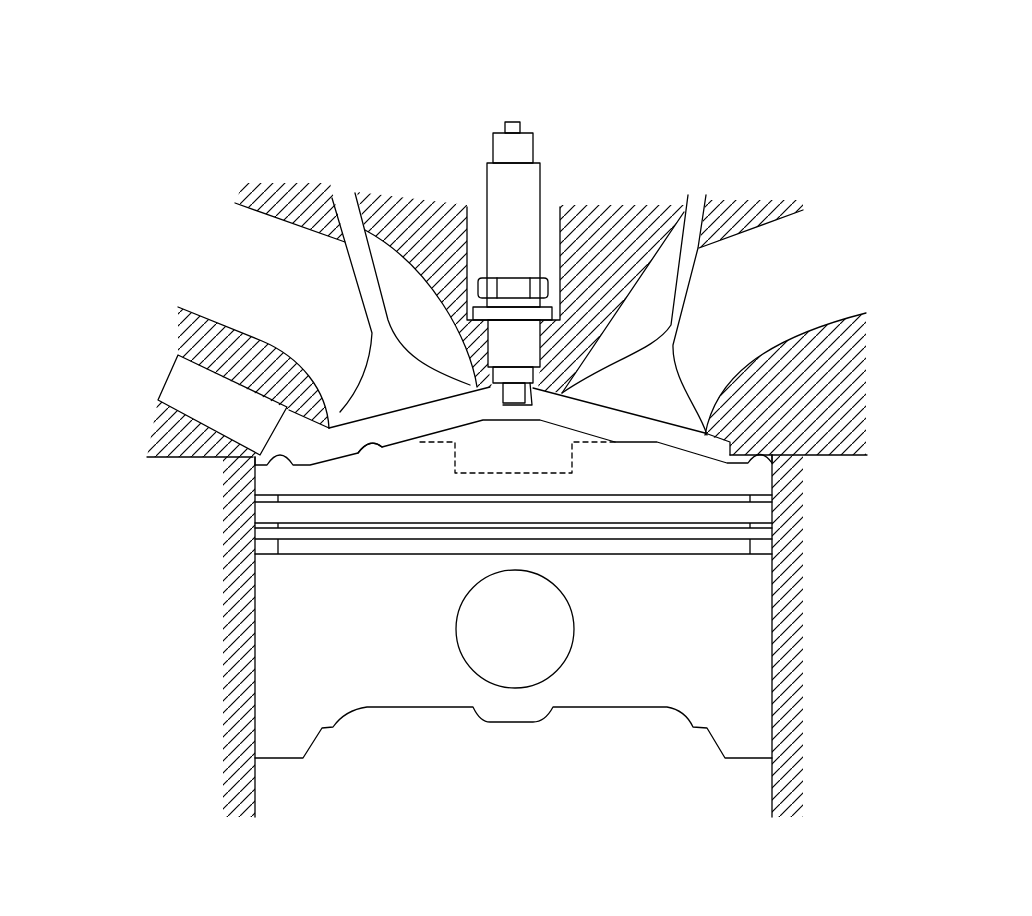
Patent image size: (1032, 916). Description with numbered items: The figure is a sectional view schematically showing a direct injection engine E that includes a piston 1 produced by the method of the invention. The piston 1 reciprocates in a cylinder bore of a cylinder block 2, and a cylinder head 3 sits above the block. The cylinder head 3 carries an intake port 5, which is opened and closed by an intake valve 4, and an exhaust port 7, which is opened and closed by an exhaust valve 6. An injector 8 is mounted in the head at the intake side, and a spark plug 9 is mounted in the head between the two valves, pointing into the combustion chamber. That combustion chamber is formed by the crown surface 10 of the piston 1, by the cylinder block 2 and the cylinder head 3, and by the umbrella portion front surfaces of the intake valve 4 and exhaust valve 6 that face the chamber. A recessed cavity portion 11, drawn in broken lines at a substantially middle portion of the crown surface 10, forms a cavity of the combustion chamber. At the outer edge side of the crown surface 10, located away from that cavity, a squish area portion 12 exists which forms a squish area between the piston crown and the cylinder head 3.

The direct injection engine E is at (738, 106).
The piston 1 is at (625, 693).
The cylinder block 2 is at (815, 470).
The cylinder head 3 is at (182, 428).
The intake valve 4 is at (363, 277).
The intake port 5 is at (403, 293).
The exhaust valve 6 is at (670, 278).
The exhaust port 7 is at (765, 245).
The injector 8 is at (185, 388).
The spark plug 9 is at (533, 180).
The crown surface 10 is at (360, 455).
The recessed cavity portion 11 is at (545, 463).
The squish area portion 12 is at (247, 472).